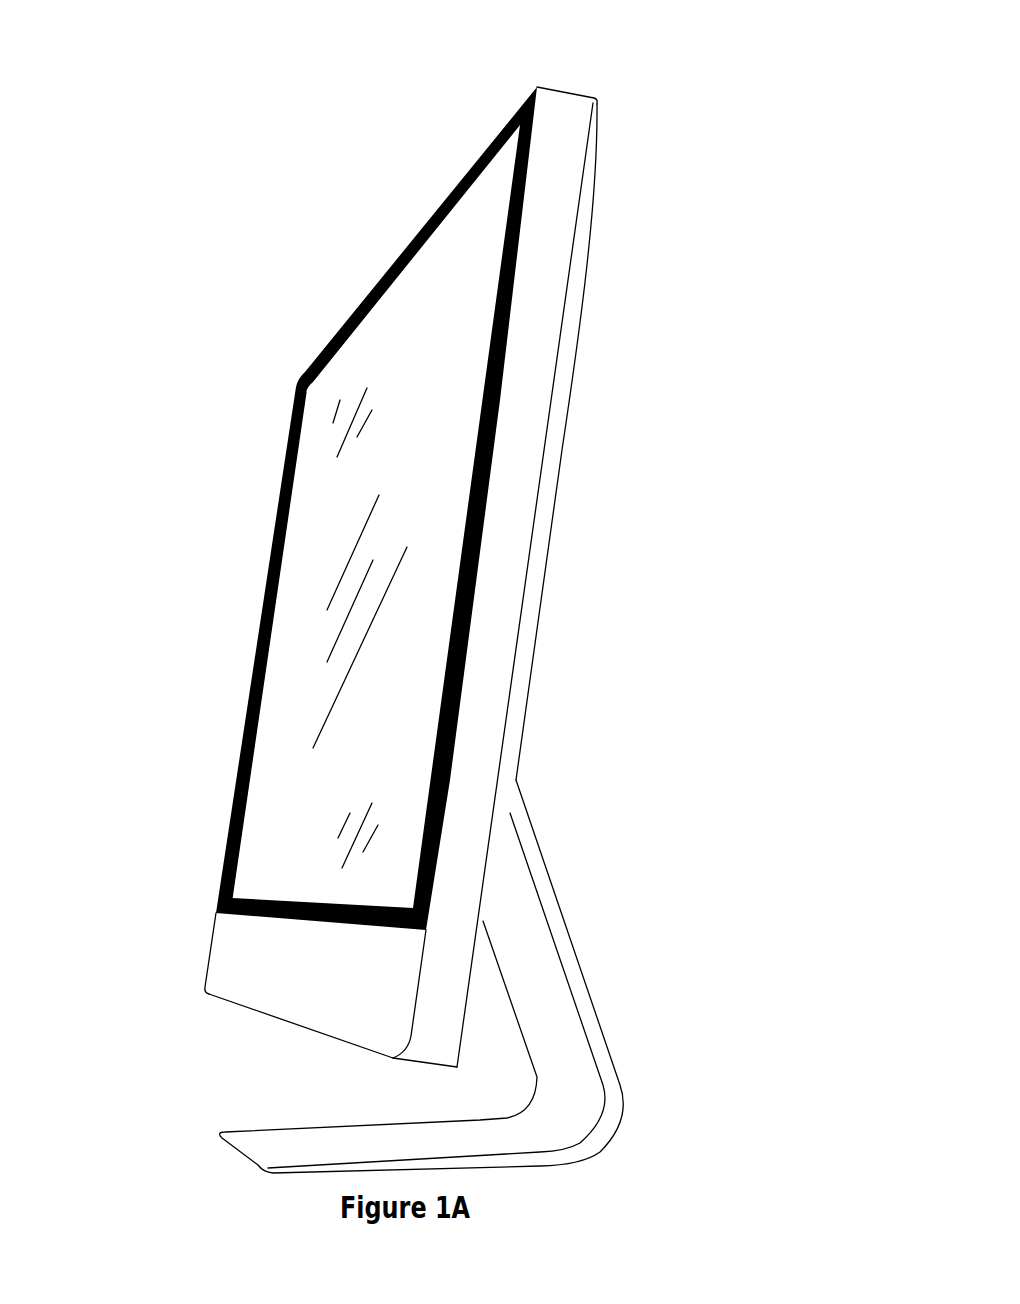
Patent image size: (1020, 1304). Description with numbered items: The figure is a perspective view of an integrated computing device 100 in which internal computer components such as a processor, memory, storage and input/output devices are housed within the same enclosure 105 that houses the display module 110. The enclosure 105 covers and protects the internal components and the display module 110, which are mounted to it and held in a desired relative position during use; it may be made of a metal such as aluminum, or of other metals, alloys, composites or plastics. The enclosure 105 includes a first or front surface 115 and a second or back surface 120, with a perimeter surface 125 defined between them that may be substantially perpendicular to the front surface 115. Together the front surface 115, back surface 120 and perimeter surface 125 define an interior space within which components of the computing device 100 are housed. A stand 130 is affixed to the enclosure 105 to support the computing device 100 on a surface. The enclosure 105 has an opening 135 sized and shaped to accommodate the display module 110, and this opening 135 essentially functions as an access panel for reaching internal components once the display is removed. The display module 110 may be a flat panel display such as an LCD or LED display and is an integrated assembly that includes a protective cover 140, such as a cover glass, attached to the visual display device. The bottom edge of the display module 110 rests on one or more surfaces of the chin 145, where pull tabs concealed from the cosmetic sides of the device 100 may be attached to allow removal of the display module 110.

The integrated computing device 100 is at (468, 598).
The enclosure 105 is at (531, 549).
The display module 110 is at (301, 508).
The front surface 115 is at (269, 985).
The back surface 120 is at (527, 663).
The perimeter surface 125 is at (570, 99).
The stand 130 is at (582, 983).
The opening 135 is at (441, 110).
The protective cover 140 is at (317, 412).
The chin 145 is at (340, 1020).